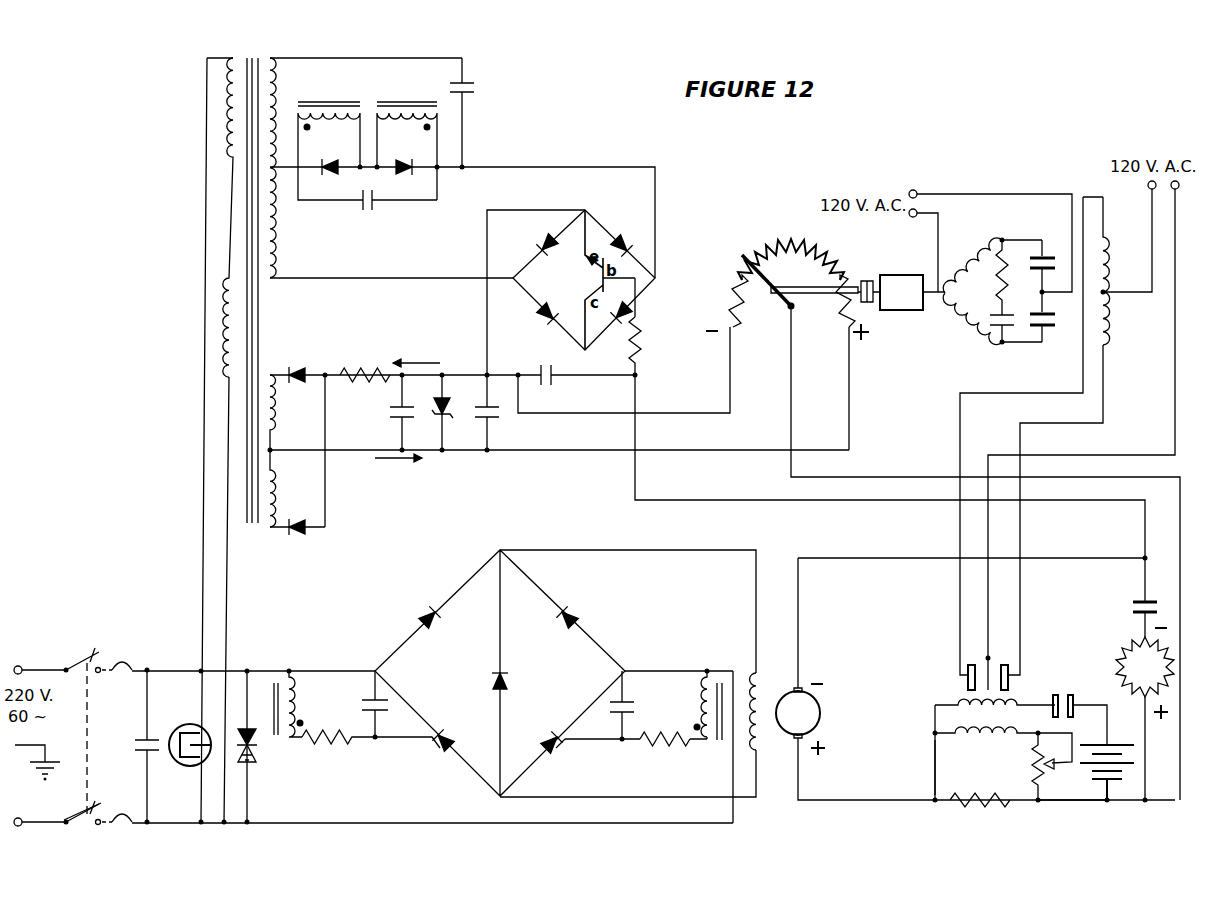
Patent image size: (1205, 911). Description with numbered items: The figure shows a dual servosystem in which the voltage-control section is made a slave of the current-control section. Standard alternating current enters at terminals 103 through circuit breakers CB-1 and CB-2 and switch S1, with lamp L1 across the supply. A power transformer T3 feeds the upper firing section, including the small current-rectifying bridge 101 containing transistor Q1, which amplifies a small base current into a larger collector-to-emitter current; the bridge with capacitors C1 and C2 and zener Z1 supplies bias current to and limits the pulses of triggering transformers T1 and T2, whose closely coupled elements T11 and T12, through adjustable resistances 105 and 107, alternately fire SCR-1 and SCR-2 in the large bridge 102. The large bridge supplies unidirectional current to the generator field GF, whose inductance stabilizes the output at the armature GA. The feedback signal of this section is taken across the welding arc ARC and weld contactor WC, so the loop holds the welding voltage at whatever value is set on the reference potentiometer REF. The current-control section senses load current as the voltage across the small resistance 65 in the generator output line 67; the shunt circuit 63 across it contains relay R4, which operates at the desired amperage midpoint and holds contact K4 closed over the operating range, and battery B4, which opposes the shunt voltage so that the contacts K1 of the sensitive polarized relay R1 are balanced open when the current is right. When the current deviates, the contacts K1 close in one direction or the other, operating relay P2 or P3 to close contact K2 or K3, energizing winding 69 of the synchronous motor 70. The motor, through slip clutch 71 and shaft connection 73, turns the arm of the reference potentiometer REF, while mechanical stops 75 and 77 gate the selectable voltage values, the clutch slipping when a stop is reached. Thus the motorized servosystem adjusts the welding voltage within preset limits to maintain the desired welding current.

The power transformer T3 is at (262, 58).
The triggering transformer T1 is at (330, 102).
The triggering transformer T2 is at (400, 102).
The current-rectifying bridge circuit 101 is at (600, 228).
The transistor Q1 is at (599, 279).
The capacitor C1 is at (390, 412).
The zener diode Z1 is at (448, 412).
The capacitor C2 is at (491, 421).
The limit stop 77 is at (737, 277).
The limit stop 75 is at (831, 270).
The reference potentiometer REF is at (772, 291).
The motor shaft connection 73 is at (818, 294).
The slip clutch 71 is at (869, 280).
The synchronous motor 70 is at (900, 277).
The motor winding 69 is at (964, 320).
The relay-operated contact K3 is at (1050, 255).
The relay-operated contact K2 is at (1051, 329).
The relay P2 is at (1108, 264).
The relay P3 is at (1108, 344).
The terminals 103 is at (18, 666).
The circuit breaker CB-1 is at (124, 655).
The circuit breaker CB-2 is at (113, 815).
The switch S1 is at (70, 827).
The lamp L1 is at (184, 767).
The triggering transformer element T11 is at (291, 704).
The adjustable resistance 105 is at (354, 713).
The silicon controlled rectifier SCR-1 is at (437, 749).
The large bridge circuit 102 is at (474, 773).
The silicon controlled rectifier SCR-2 is at (556, 751).
The adjustable resistance 107 is at (688, 718).
The triggering transformer element T12 is at (706, 703).
The generator field GF is at (761, 684).
The generator armature GA is at (798, 648).
The weld contactor WC is at (1125, 605).
The welding arc ARC is at (1145, 667).
The sensitive polarized relay R1 is at (966, 700).
The double-throw contacts K1 is at (1012, 678).
The contact K4 is at (1070, 690).
The relay R4 is at (992, 742).
The battery B4 is at (1088, 765).
The shunt circuit 63 is at (935, 770).
The small resistance 65 is at (990, 806).
The generator output line 67 is at (1068, 803).